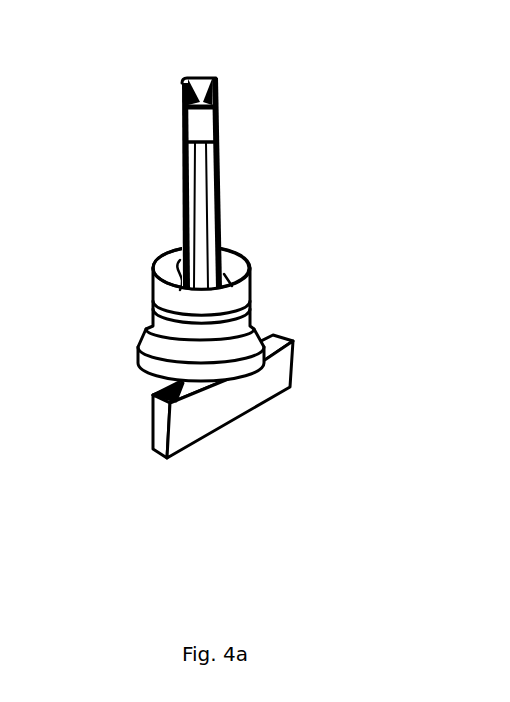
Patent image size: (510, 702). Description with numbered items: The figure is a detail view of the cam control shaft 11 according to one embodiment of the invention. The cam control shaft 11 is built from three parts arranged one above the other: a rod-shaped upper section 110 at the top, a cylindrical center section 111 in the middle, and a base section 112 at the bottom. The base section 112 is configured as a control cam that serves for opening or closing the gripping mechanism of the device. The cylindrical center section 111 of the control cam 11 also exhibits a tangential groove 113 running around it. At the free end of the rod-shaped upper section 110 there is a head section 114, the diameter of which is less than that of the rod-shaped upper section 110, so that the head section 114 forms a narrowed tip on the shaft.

The cam control shaft 11 is at (114, 159).
The rod-shaped upper section 110 is at (223, 191).
The cylindrical center section 111 is at (131, 296).
The base section 112 is at (236, 427).
The tangential groove 113 is at (237, 314).
The head section 114 is at (223, 83).